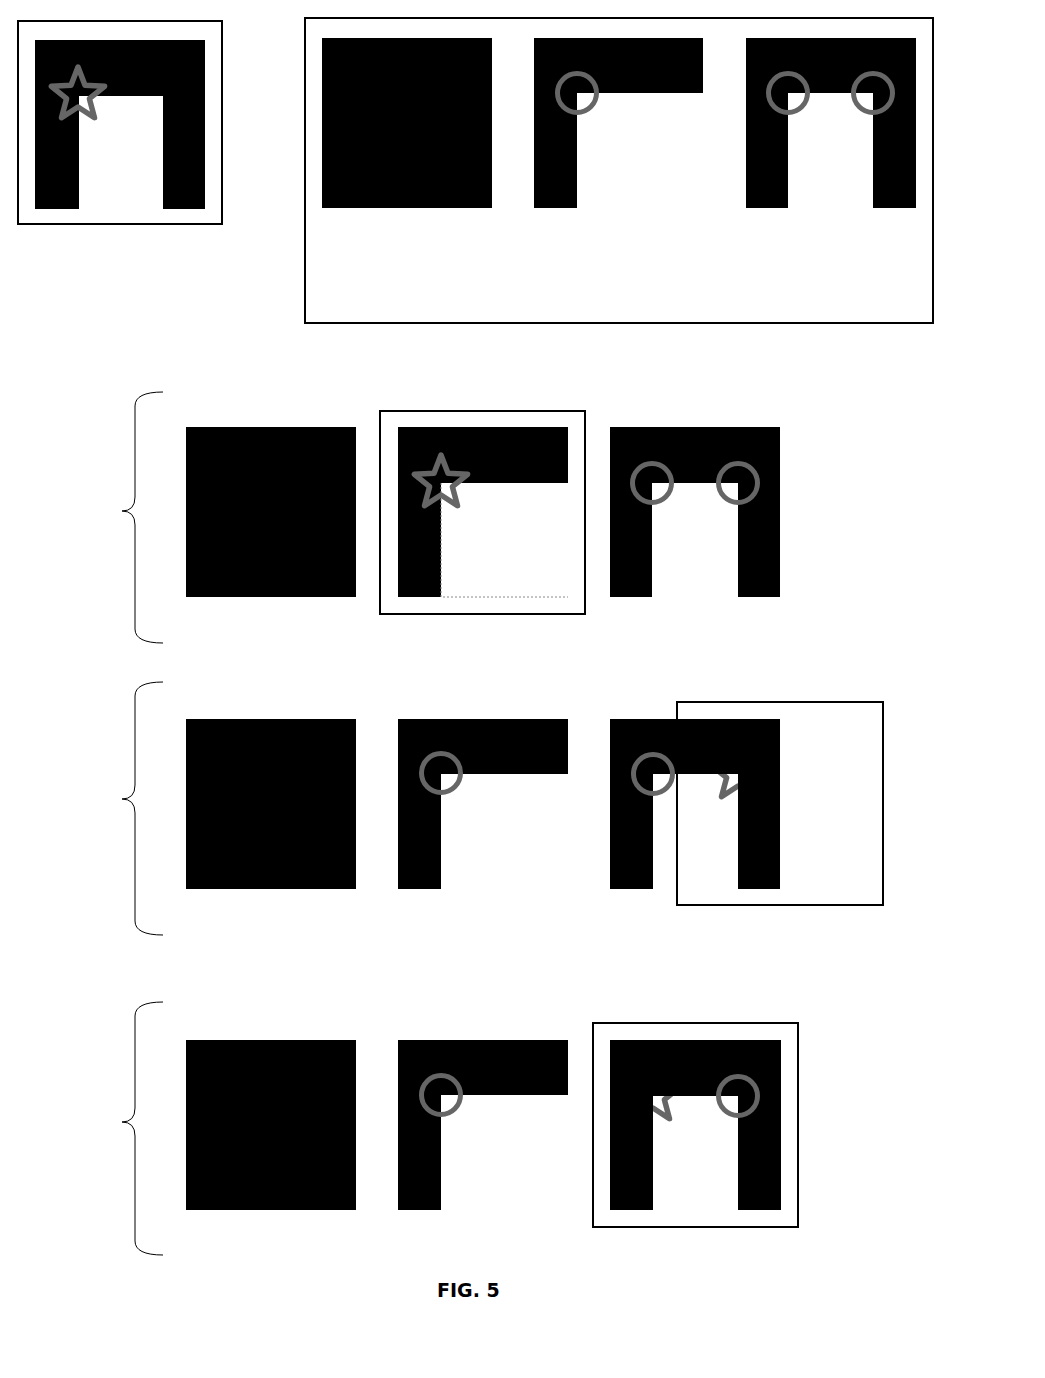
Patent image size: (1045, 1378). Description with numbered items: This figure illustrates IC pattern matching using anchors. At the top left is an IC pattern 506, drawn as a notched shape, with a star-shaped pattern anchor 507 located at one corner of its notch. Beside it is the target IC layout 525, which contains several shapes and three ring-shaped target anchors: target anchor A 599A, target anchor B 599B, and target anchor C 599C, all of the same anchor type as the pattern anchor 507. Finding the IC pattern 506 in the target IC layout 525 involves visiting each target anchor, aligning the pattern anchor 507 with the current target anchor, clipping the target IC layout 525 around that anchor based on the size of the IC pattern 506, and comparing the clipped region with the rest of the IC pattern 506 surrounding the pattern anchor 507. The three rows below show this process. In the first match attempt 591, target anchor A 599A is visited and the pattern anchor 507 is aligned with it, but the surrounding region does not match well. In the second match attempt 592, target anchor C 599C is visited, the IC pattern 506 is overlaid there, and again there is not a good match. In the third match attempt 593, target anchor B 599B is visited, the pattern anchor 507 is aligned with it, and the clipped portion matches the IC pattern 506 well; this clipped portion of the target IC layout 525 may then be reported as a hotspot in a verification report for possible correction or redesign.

The IC pattern 506 is at (118, 266).
The pattern anchor 507 is at (97, 113).
The target IC layout 525 is at (559, 614).
The target anchor A 599A is at (589, 114).
The target anchor B 599B is at (803, 115).
The target anchor C 599C is at (854, 115).
The match attempt 1 591 is at (94, 517).
The match attempt 2 592 is at (94, 808).
The match attempt 3 593 is at (94, 1128).